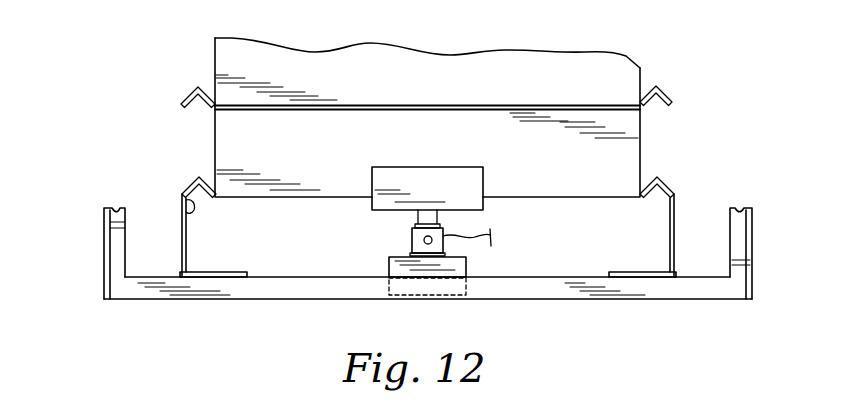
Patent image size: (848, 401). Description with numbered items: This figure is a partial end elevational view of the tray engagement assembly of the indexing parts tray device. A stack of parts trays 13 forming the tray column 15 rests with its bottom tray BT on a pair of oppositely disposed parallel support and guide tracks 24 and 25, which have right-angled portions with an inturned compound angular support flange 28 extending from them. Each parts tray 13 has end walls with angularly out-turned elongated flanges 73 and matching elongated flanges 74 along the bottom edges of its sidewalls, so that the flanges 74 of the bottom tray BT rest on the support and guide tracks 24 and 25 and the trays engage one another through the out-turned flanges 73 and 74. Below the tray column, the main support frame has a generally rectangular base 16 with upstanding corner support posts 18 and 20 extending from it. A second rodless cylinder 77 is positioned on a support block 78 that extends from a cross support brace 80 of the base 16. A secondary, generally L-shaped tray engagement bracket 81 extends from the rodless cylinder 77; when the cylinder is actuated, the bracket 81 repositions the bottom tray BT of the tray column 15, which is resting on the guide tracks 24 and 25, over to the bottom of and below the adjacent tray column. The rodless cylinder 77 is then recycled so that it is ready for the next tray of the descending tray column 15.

The parts tray 13 is at (545, 70).
The second tray column 15 is at (657, 59).
The base 16 is at (252, 292).
The corner support post 18 is at (115, 240).
The corner support post 20 is at (740, 232).
The support and guide track 24 is at (677, 218).
The support and guide track 25 is at (186, 247).
The inturned compound angular support flange 28 is at (176, 218).
The angularly out-turned elongated flange 73 is at (202, 108).
The elongated flange 74 is at (197, 87).
The second rodless cylinder 77 is at (412, 237).
The support block 78 is at (447, 269).
The cross support brace 80 is at (418, 293).
The L-shaped tray engagement bracket 81 is at (452, 183).
The bottom tray BT is at (617, 165).